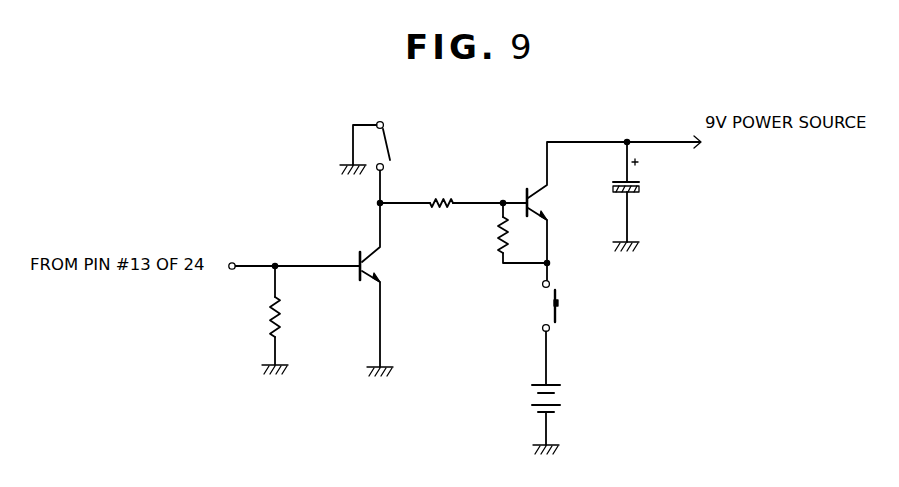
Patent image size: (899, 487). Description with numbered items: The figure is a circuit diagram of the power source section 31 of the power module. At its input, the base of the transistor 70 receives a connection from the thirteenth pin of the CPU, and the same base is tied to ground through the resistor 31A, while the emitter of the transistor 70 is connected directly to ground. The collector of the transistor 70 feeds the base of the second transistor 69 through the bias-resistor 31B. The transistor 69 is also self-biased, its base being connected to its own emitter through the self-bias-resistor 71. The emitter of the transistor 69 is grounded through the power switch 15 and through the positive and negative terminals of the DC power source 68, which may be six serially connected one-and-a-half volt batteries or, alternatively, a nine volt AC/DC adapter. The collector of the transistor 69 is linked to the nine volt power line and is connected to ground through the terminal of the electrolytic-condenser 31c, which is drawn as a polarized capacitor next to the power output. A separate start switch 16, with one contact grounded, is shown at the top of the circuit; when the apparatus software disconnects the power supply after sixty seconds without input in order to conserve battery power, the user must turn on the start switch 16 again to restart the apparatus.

The power source section 31 is at (520, 142).
The resistor 31A is at (266, 318).
The bias-resistor 31B is at (436, 201).
The electrolytic-condenser 31c is at (640, 187).
The start switch 16 is at (388, 160).
The power switch 15 is at (558, 317).
The DC power source 68 is at (567, 395).
The transistor 69 is at (543, 207).
The transistor 70 is at (375, 265).
The self-bias-resistor 71 is at (497, 247).